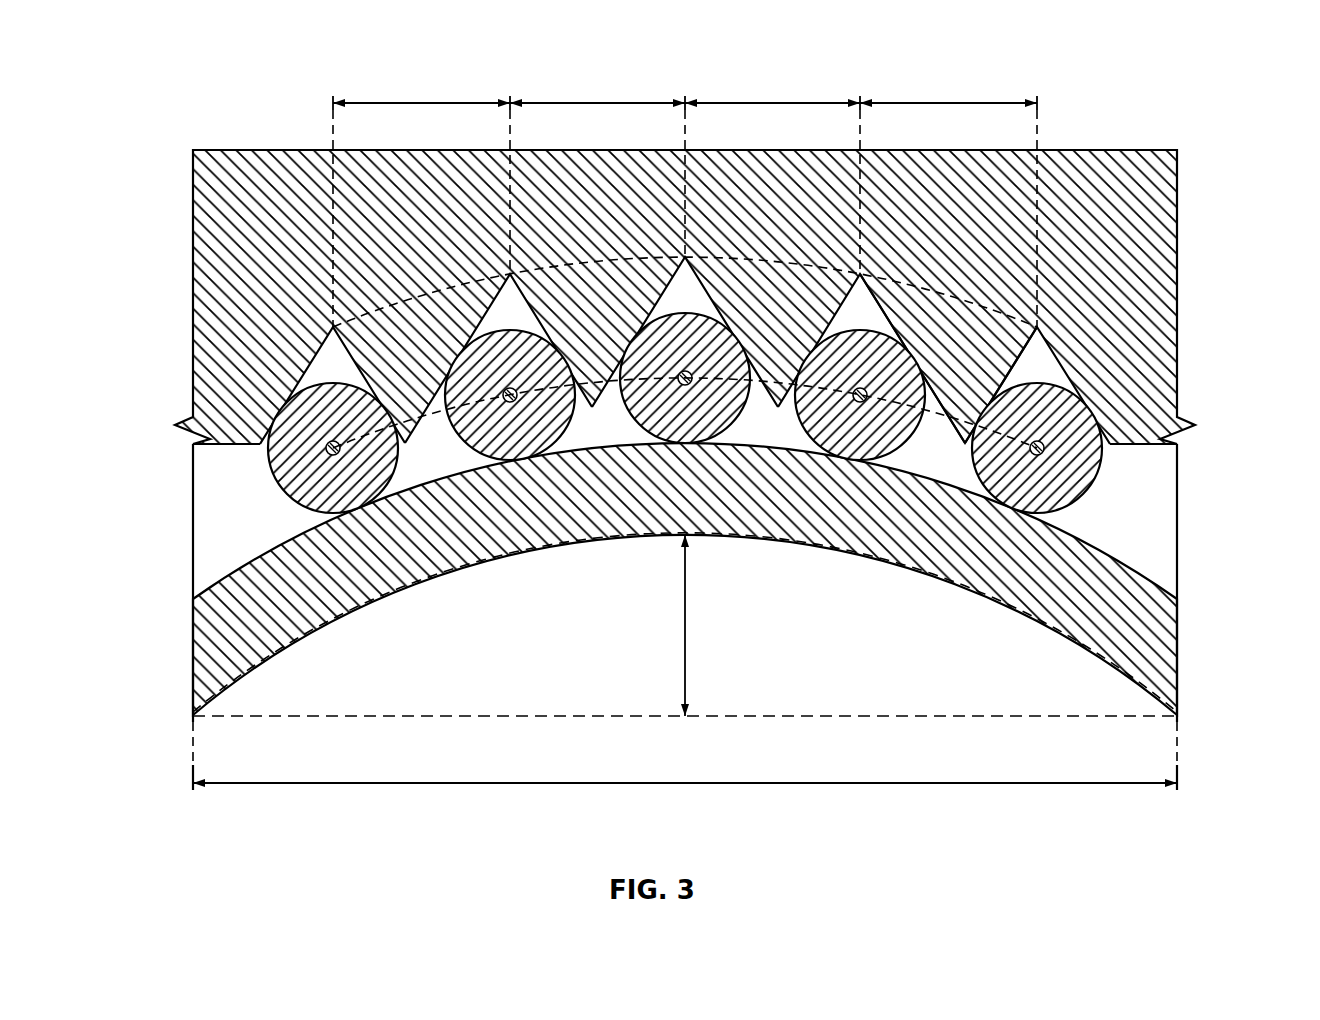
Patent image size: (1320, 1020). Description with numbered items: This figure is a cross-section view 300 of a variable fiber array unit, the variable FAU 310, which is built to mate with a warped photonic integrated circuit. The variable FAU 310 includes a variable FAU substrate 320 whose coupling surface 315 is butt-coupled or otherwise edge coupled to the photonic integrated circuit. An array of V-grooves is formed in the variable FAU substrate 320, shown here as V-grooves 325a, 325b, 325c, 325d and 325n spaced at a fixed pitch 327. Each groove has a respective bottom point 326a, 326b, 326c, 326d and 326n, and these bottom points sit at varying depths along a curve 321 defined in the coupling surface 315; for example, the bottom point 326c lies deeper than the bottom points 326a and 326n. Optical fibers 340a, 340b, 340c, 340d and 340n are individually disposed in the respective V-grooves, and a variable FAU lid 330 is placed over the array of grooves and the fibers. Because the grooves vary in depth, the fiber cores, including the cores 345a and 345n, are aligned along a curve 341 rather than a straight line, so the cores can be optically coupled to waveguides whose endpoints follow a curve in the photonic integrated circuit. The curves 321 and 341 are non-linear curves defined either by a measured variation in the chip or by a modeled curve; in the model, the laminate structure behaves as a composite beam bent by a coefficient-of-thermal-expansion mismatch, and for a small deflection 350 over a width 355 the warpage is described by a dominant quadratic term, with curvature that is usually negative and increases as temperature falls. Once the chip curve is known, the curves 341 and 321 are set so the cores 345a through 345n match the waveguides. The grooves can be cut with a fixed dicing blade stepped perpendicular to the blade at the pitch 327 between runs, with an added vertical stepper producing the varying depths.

The cross-section view 300 is at (1184, 51).
The variable FAU 310 is at (736, 271).
The coupling surface 315 is at (1155, 203).
The variable FAU substrate 320 is at (1122, 260).
The curve 321 is at (936, 405).
The V-groove 325a is at (347, 374).
The V-groove 325b is at (522, 320).
The V-groove 325c is at (700, 303).
The V-groove 325d is at (873, 317).
The V-groove 325n is at (1045, 370).
The bottom point 326a is at (334, 326).
The bottom point 326b is at (511, 274).
The bottom point 326c is at (686, 257).
The bottom point 326d is at (861, 272).
The bottom point 326n is at (1038, 326).
The pitch 327 is at (569, 103).
The variable FAU lid 330 is at (1066, 608).
The optical fiber 340a is at (297, 448).
The optical fiber 340b is at (540, 376).
The optical fiber 340c is at (716, 360).
The optical fiber 340d is at (830, 377).
The optical fiber 340n is at (1020, 506).
The curve 341 is at (985, 494).
The core 345a is at (358, 430).
The core 345n is at (1045, 452).
The deflection 350 is at (687, 627).
The width 355 is at (865, 784).